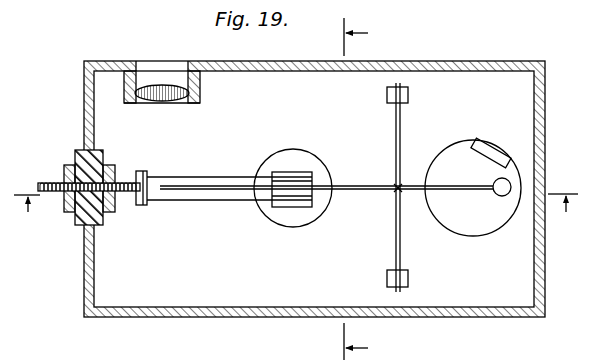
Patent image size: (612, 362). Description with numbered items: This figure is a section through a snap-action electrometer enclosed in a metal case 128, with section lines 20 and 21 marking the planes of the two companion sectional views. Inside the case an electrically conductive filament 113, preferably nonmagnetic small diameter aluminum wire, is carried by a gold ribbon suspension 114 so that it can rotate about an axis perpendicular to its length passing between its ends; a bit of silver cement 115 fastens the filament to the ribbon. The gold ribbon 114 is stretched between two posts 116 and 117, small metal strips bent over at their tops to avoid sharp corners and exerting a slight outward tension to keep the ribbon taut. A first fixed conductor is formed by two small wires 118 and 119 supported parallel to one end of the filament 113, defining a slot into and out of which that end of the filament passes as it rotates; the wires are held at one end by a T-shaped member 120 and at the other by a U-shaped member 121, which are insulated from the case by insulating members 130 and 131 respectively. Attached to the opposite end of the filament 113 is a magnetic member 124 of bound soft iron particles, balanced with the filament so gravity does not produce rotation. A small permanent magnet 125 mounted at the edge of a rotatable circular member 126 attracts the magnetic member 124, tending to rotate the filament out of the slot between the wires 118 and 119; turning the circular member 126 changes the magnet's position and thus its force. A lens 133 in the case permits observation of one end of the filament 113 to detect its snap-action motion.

The section line 20- 20 is at (296, 215).
The section line 21- 21 is at (365, 189).
The electrically conductive filament 113 is at (367, 185).
The gold ribbon suspension 114 is at (401, 133).
The silver cement 115 is at (396, 191).
The post 116 is at (408, 96).
The post 117 is at (408, 279).
The wire 118 is at (207, 177).
The wire 119 is at (203, 201).
The T-shaped member 120 is at (123, 183).
The U-shaped member 121 is at (307, 172).
The magnetic member 124 is at (505, 192).
The permanent magnet 125 is at (498, 155).
The circular member 126 is at (478, 237).
The metal case 128 is at (250, 317).
The insulating member 130 is at (82, 152).
The insulating member 131 is at (297, 150).
The lens 133 is at (172, 102).